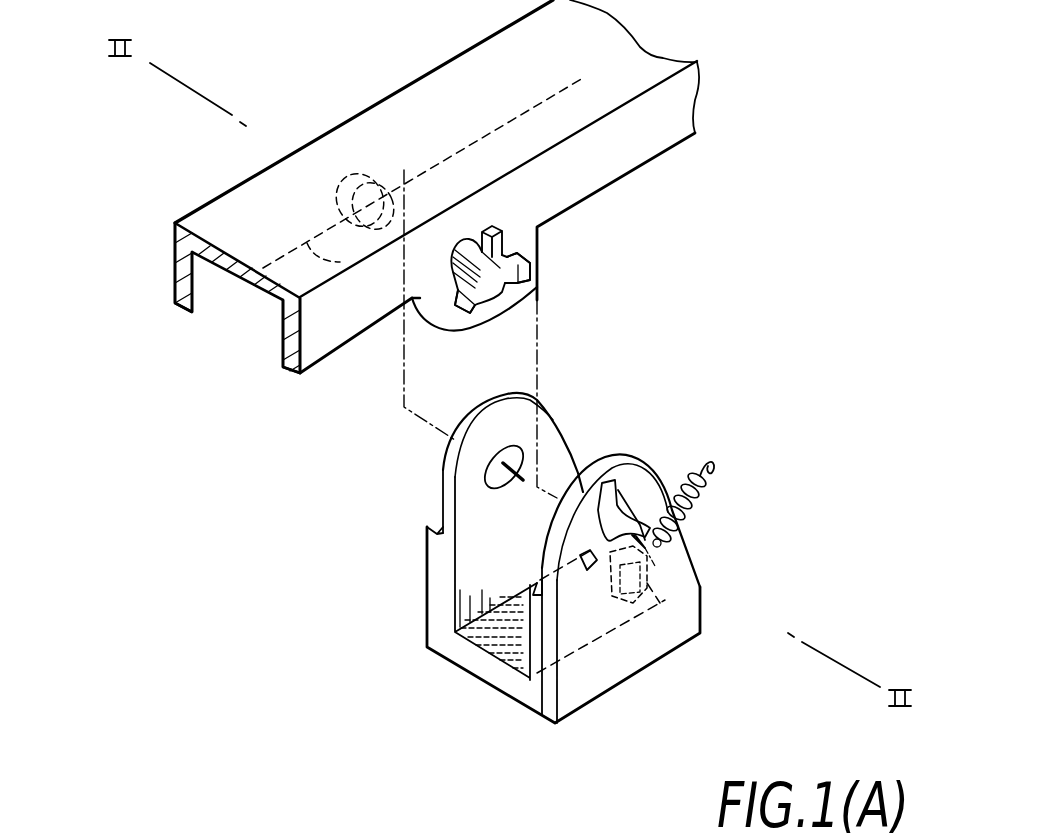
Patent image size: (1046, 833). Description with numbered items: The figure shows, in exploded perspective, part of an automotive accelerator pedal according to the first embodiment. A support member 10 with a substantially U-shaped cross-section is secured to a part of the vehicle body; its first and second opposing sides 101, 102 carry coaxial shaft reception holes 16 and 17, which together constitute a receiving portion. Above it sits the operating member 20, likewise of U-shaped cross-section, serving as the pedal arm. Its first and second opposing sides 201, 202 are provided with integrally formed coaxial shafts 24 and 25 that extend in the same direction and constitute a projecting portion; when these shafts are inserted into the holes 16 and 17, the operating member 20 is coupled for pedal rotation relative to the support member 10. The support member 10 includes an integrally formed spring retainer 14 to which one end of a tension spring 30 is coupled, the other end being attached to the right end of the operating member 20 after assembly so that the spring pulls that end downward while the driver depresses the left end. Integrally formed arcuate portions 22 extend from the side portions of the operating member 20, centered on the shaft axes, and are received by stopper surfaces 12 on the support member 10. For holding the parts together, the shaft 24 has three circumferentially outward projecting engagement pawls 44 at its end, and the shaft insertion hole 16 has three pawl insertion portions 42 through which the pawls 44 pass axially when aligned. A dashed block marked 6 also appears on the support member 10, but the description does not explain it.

The operating member 20 is at (410, 107).
The shaft 25 is at (342, 193).
The arcuate portions 22 is at (436, 318).
The shaft 24 is at (520, 262).
The engagement pawls 44 is at (497, 227).
The shaft reception hole 17 is at (503, 443).
The shaft insertion hole 16 is at (640, 470).
The pawl insertion portions 42 is at (605, 483).
The tension spring 30 is at (700, 487).
The support member 10 is at (677, 583).
The first opposing side 101 is at (678, 542).
The second opposing side 102 is at (445, 457).
The spring retainer 14 is at (640, 573).
The stopper surfaces 12 is at (440, 525).
The block 6 is at (628, 574).
The first opposing side 201 is at (283, 353).
The second opposing side 202 is at (175, 255).